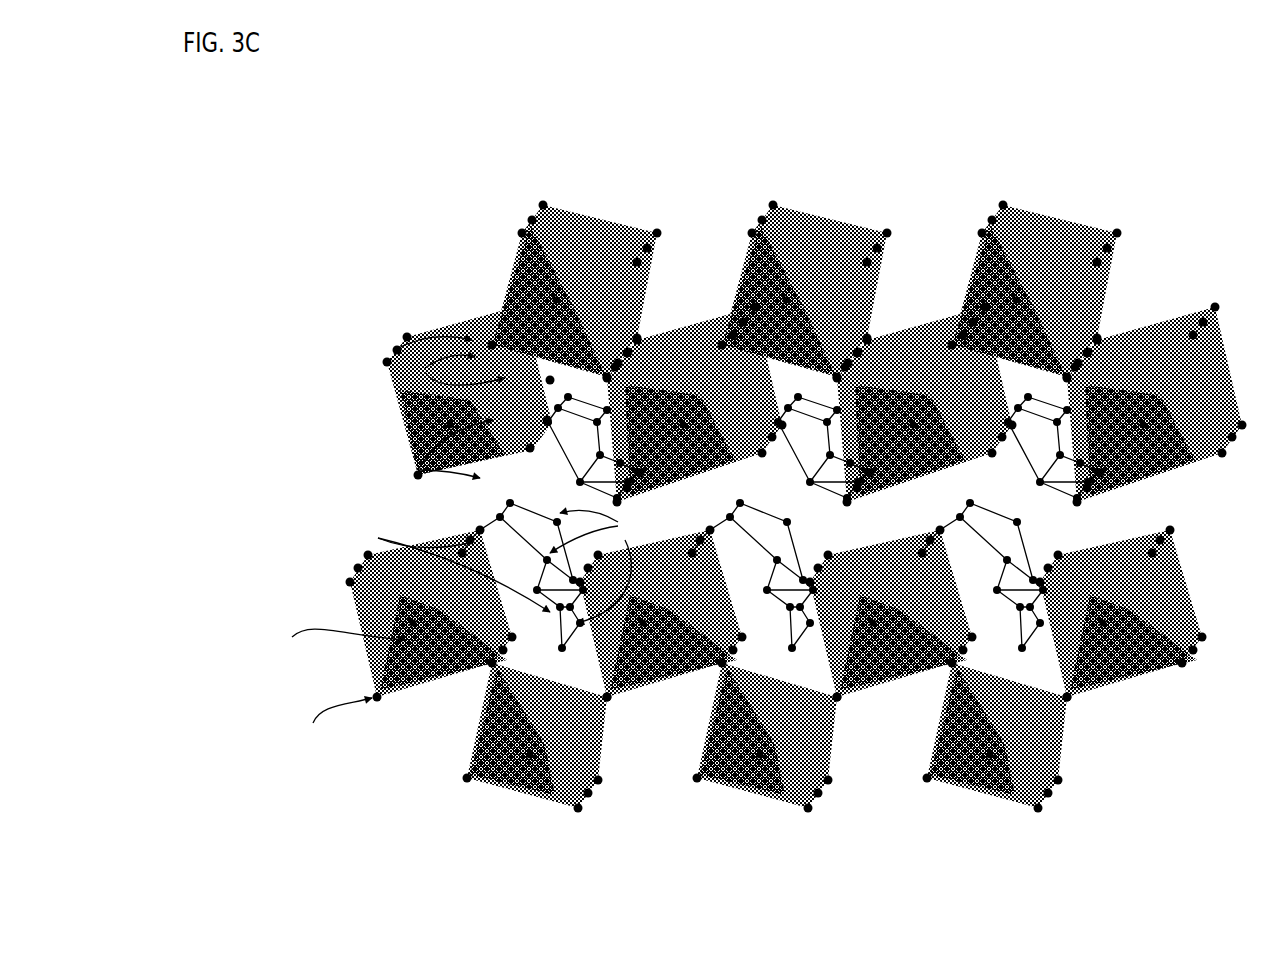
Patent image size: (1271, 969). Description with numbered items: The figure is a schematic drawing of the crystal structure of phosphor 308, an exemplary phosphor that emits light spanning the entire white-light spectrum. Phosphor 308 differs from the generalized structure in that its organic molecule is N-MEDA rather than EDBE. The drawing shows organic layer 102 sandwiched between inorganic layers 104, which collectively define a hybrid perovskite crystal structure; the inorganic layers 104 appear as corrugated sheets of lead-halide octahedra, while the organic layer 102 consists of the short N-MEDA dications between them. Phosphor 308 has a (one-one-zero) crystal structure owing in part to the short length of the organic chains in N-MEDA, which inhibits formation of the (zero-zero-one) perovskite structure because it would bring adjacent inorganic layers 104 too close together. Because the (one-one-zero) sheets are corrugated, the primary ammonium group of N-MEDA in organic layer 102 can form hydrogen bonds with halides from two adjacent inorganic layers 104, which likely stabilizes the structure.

The phosphor 308 is at (350, 143).
The inorganic layers 104 is at (362, 292).
The organic layer 102 is at (362, 485).